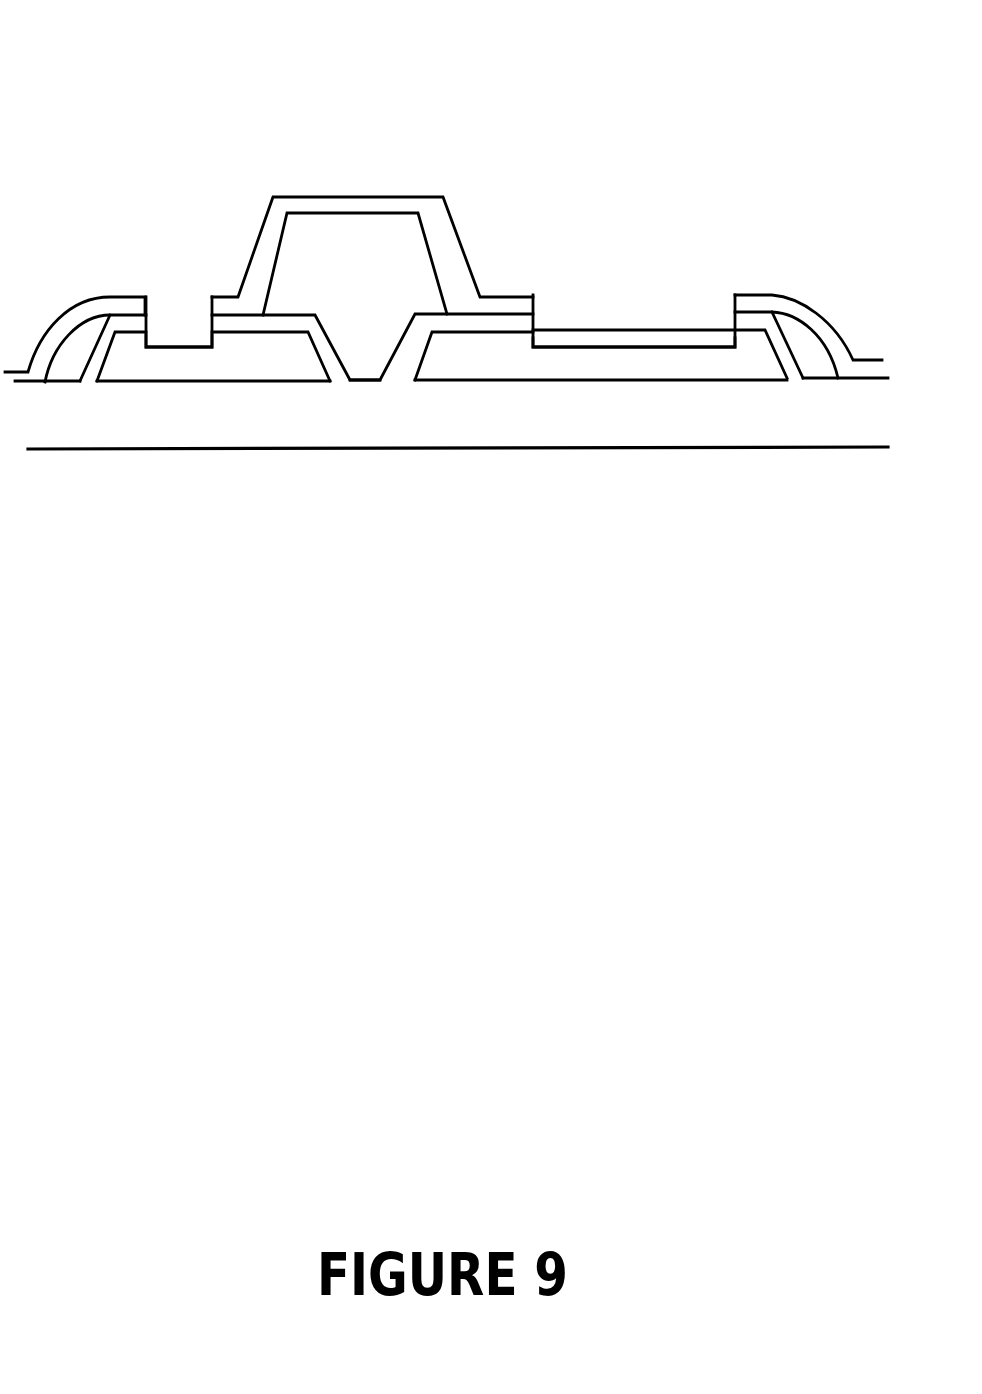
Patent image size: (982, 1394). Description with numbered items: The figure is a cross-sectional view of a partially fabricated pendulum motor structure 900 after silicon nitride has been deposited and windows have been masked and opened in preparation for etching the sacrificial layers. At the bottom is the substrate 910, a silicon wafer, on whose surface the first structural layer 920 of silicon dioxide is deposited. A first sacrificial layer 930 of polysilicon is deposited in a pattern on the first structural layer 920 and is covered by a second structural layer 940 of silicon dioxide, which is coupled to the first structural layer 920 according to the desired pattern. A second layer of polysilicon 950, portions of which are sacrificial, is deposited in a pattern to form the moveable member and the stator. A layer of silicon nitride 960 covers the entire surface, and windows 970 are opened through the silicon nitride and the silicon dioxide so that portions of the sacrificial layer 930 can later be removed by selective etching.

The semiconductor device structure 900 is at (80, 33).
The substrate 910 is at (690, 493).
The first structural layer 920 is at (738, 416).
The first sacrificial layer 930 is at (290, 374).
The second structural layer 940 is at (212, 317).
The second layer of polysilicon 950 is at (377, 250).
The layer of silicon nitride 960 is at (93, 298).
The windows 970 is at (212, 335).